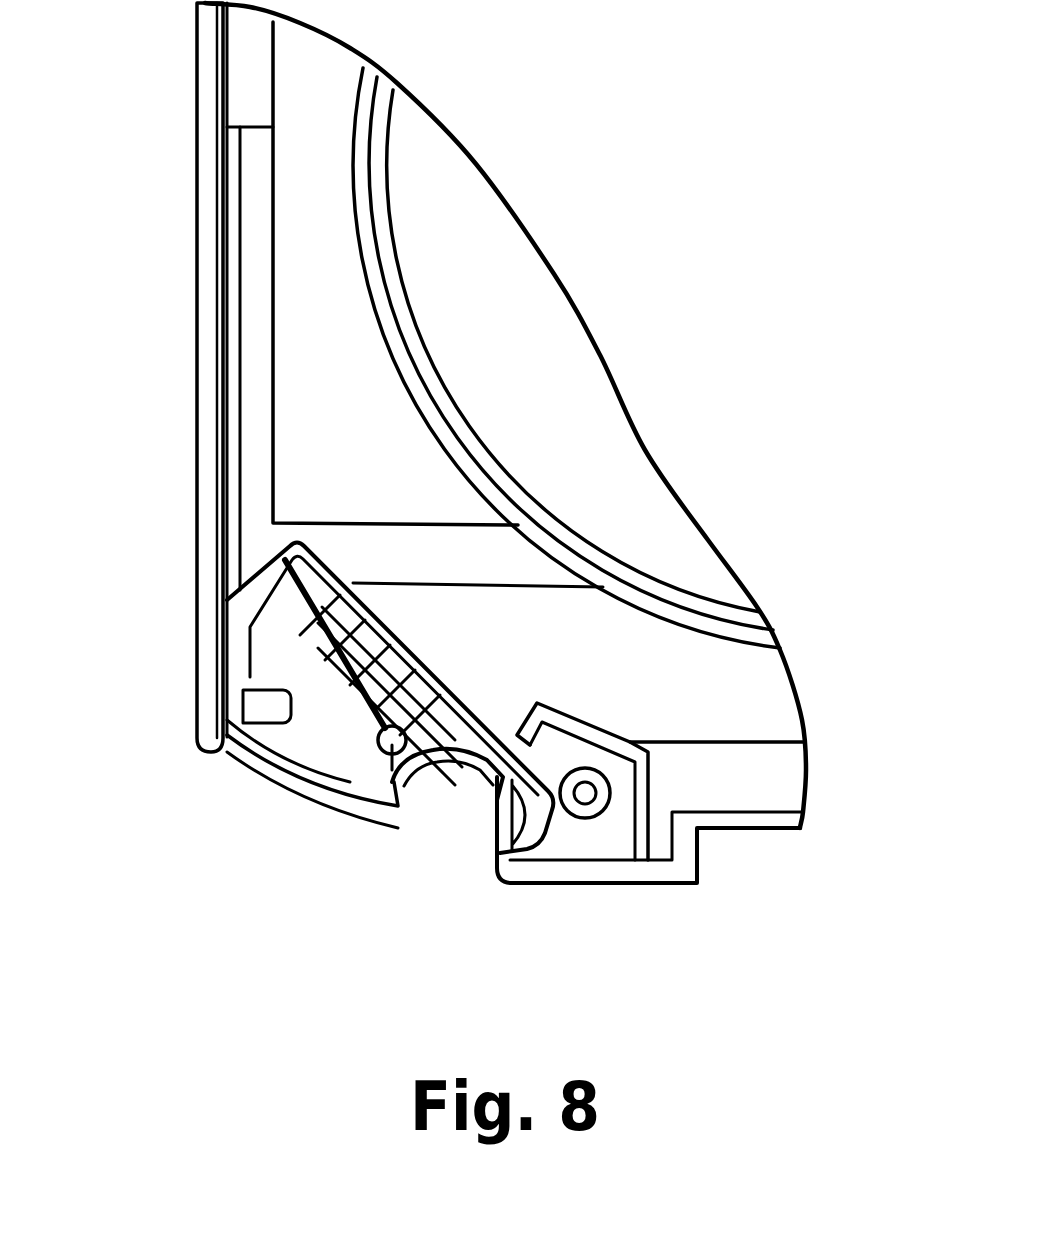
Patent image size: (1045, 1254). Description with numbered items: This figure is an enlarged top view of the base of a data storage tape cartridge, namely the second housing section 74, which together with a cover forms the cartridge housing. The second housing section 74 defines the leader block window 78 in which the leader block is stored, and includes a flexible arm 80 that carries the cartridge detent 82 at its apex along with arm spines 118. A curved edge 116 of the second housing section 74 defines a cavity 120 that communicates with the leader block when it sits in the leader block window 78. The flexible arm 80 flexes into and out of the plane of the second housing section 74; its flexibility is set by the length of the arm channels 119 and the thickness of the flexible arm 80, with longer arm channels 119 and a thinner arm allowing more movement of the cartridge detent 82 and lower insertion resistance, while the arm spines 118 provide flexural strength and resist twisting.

The second housing section 74 is at (303, 254).
The leader block window 78 is at (238, 767).
The flexible arm 80 is at (290, 698).
The cartridge detent 82 is at (385, 805).
The curved edge 116 is at (420, 783).
The arm spines 118 is at (322, 738).
The arm channels 119 is at (285, 690).
The cavity 120 is at (472, 782).